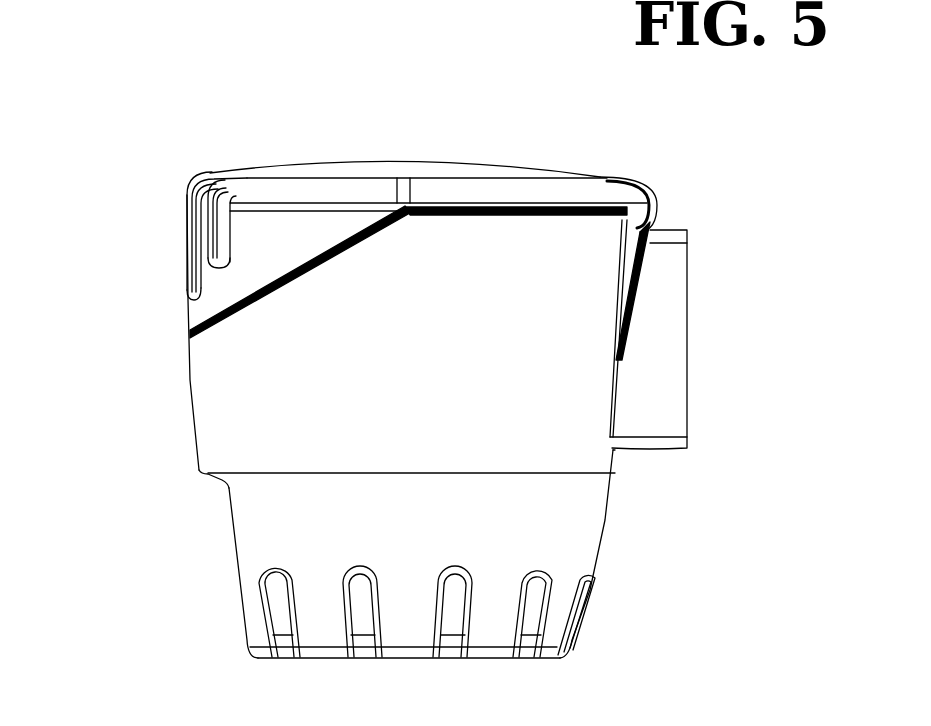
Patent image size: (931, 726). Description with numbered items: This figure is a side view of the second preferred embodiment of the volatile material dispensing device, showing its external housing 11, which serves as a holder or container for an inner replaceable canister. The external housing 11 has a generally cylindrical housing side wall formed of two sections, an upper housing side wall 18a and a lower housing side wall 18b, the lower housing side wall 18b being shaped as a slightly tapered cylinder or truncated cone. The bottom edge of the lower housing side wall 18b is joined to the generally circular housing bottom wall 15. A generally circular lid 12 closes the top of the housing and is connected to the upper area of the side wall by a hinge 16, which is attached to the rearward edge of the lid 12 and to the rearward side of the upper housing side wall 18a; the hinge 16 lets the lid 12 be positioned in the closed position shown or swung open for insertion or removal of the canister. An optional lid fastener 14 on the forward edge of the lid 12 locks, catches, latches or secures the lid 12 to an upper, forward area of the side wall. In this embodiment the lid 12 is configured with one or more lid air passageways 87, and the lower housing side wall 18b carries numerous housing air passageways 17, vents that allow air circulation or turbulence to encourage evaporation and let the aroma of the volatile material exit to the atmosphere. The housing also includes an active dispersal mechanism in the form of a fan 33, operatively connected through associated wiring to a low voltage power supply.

The external housing 11 is at (110, 138).
The lid 12 is at (390, 170).
The lid fastener 14 is at (203, 303).
The housing bottom wall 15 is at (397, 663).
The hinge 16 is at (652, 193).
The housing air passageways 17 is at (452, 578).
The upper housing side wall 18a is at (342, 442).
The lower housing side wall 18b is at (282, 523).
The fan 33 is at (665, 355).
The lid air passageways 87 is at (210, 233).